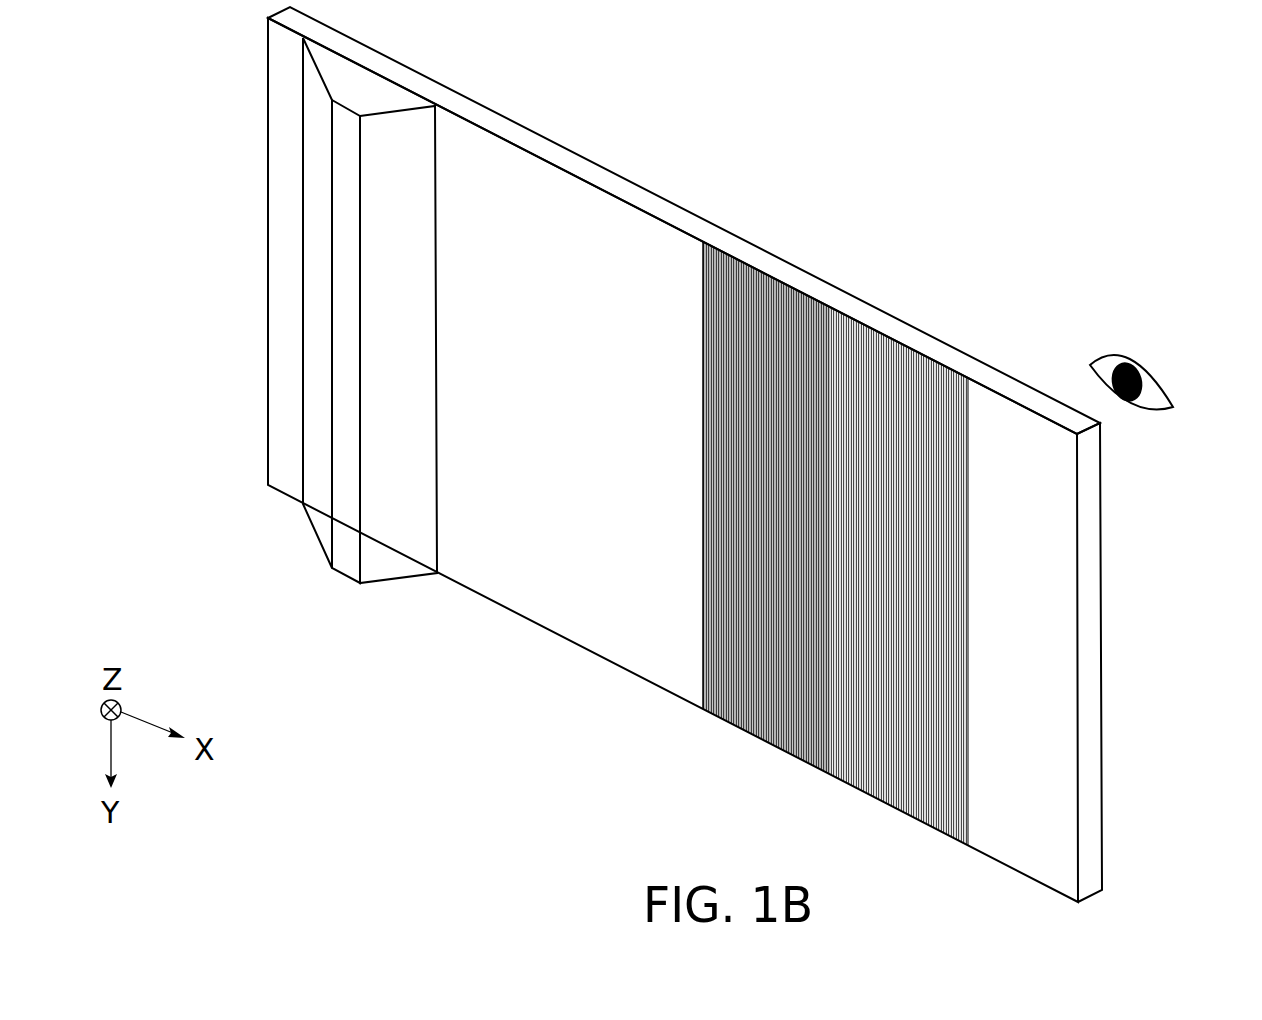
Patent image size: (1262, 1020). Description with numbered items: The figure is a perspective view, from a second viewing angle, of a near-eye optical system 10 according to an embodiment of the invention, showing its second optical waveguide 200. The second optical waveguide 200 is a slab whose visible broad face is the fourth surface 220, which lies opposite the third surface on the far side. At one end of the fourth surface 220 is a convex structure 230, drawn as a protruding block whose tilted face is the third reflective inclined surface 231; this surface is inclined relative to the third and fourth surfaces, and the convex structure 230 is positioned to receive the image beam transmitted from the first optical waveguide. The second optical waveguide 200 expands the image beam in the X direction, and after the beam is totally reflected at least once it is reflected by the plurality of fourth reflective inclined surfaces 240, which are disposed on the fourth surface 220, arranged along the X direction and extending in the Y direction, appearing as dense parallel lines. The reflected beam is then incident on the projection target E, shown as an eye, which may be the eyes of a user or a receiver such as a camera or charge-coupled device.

The near-eye optical system 10 is at (649, 454).
The second optical waveguide 200 is at (627, 454).
The fourth surface 220 is at (295, 310).
The convex structure 230 is at (310, 244).
The third reflective inclined surface 231 is at (308, 315).
The fourth reflective inclined surfaces 240 is at (976, 411).
The projection target E is at (1140, 371).